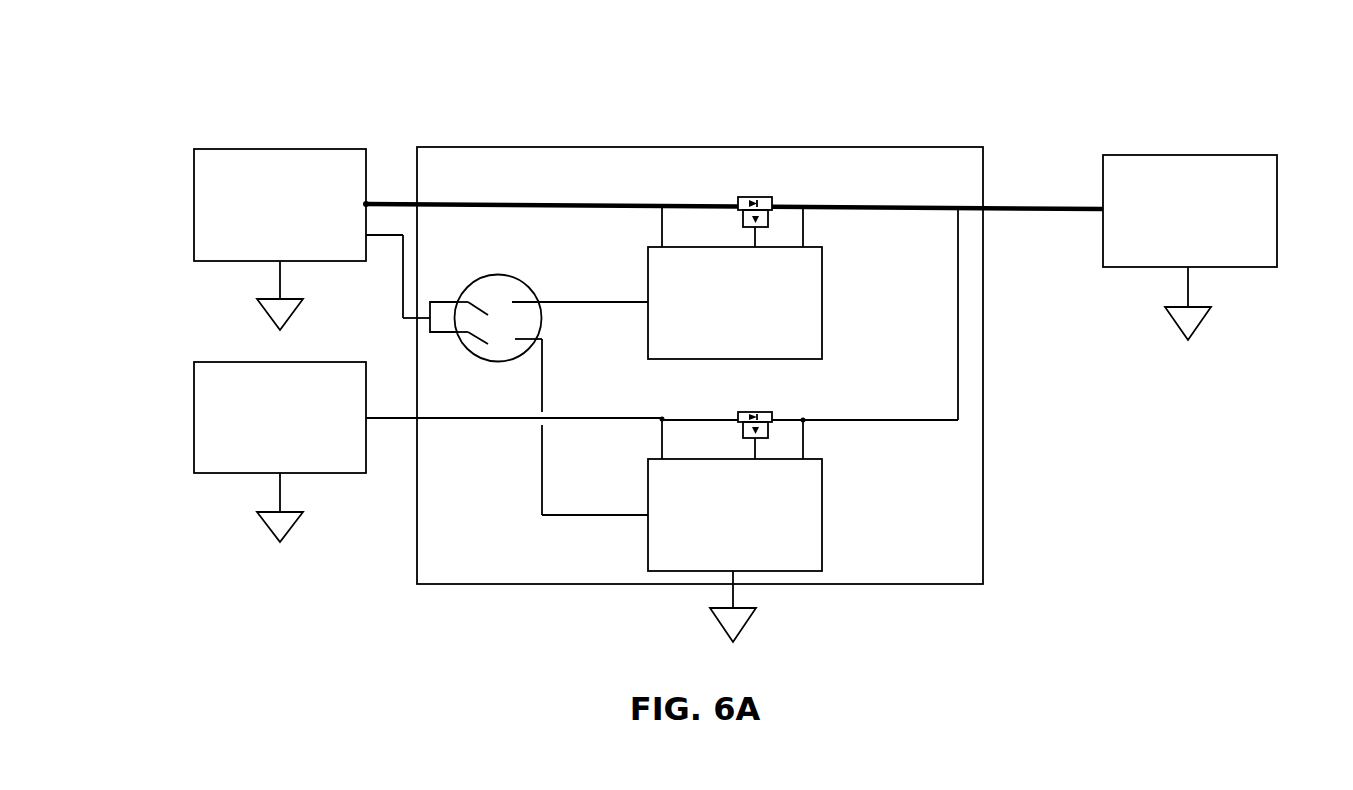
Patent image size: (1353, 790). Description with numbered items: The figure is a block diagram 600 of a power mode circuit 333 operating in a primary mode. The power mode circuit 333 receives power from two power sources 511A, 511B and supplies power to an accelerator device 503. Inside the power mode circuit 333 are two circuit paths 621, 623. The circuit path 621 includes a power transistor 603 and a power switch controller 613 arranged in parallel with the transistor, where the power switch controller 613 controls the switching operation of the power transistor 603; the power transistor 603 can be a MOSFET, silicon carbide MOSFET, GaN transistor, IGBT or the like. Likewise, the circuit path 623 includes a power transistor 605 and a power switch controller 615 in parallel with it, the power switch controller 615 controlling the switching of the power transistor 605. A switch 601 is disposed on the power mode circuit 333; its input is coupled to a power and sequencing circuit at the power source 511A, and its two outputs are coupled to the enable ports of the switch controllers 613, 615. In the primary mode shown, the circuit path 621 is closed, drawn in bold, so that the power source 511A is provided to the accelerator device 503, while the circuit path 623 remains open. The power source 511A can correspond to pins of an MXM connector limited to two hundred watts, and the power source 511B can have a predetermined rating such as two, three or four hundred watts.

The power delivery circuit 600 is at (735, 330).
The power mode circuit 333 is at (700, 365).
The power source 511A is at (280, 239).
The power source 511B is at (280, 452).
The accelerator device 503 is at (1190, 247).
The circuit path 621 is at (510, 197).
The circuit path 623 is at (578, 408).
The switch 601 is at (515, 278).
The power transistor 603 is at (784, 192).
The power transistor 605 is at (783, 406).
The power switch controller 613 is at (735, 303).
The power switch controller 615 is at (735, 550).